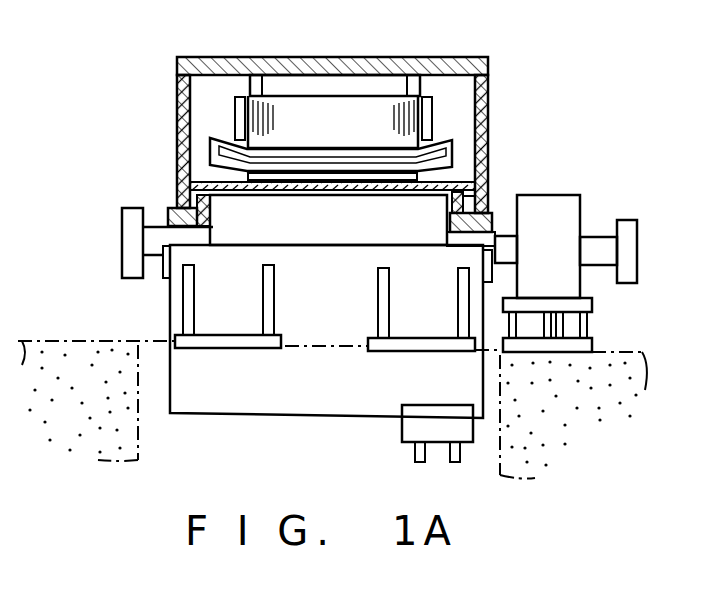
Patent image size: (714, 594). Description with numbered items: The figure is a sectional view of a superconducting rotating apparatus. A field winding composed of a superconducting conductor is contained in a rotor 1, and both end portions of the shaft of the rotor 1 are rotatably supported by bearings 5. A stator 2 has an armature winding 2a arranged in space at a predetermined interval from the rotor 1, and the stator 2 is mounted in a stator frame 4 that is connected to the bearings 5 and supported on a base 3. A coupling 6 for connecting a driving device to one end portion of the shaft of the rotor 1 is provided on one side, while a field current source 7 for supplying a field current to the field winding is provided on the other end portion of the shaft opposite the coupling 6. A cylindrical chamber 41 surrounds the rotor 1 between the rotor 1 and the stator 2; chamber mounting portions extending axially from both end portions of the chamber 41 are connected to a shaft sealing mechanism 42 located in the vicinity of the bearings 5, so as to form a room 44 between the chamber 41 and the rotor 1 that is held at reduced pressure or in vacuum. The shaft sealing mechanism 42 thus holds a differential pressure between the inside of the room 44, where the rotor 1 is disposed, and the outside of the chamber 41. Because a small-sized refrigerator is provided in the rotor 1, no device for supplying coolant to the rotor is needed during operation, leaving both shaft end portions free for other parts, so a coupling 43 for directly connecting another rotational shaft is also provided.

The rotor 1 is at (175, 205).
The stator 2 is at (291, 94).
The armature winding 2a is at (216, 150).
The base 3 is at (68, 413).
The stator frame 4 is at (352, 57).
The bearings 5 is at (167, 210).
The coupling 6 is at (122, 258).
The field current source 7 is at (568, 195).
The cylindrical chamber 41 is at (458, 198).
The shaft sealing mechanism 42 is at (210, 218).
The coupling 43 is at (632, 220).
The room 44 is at (487, 212).